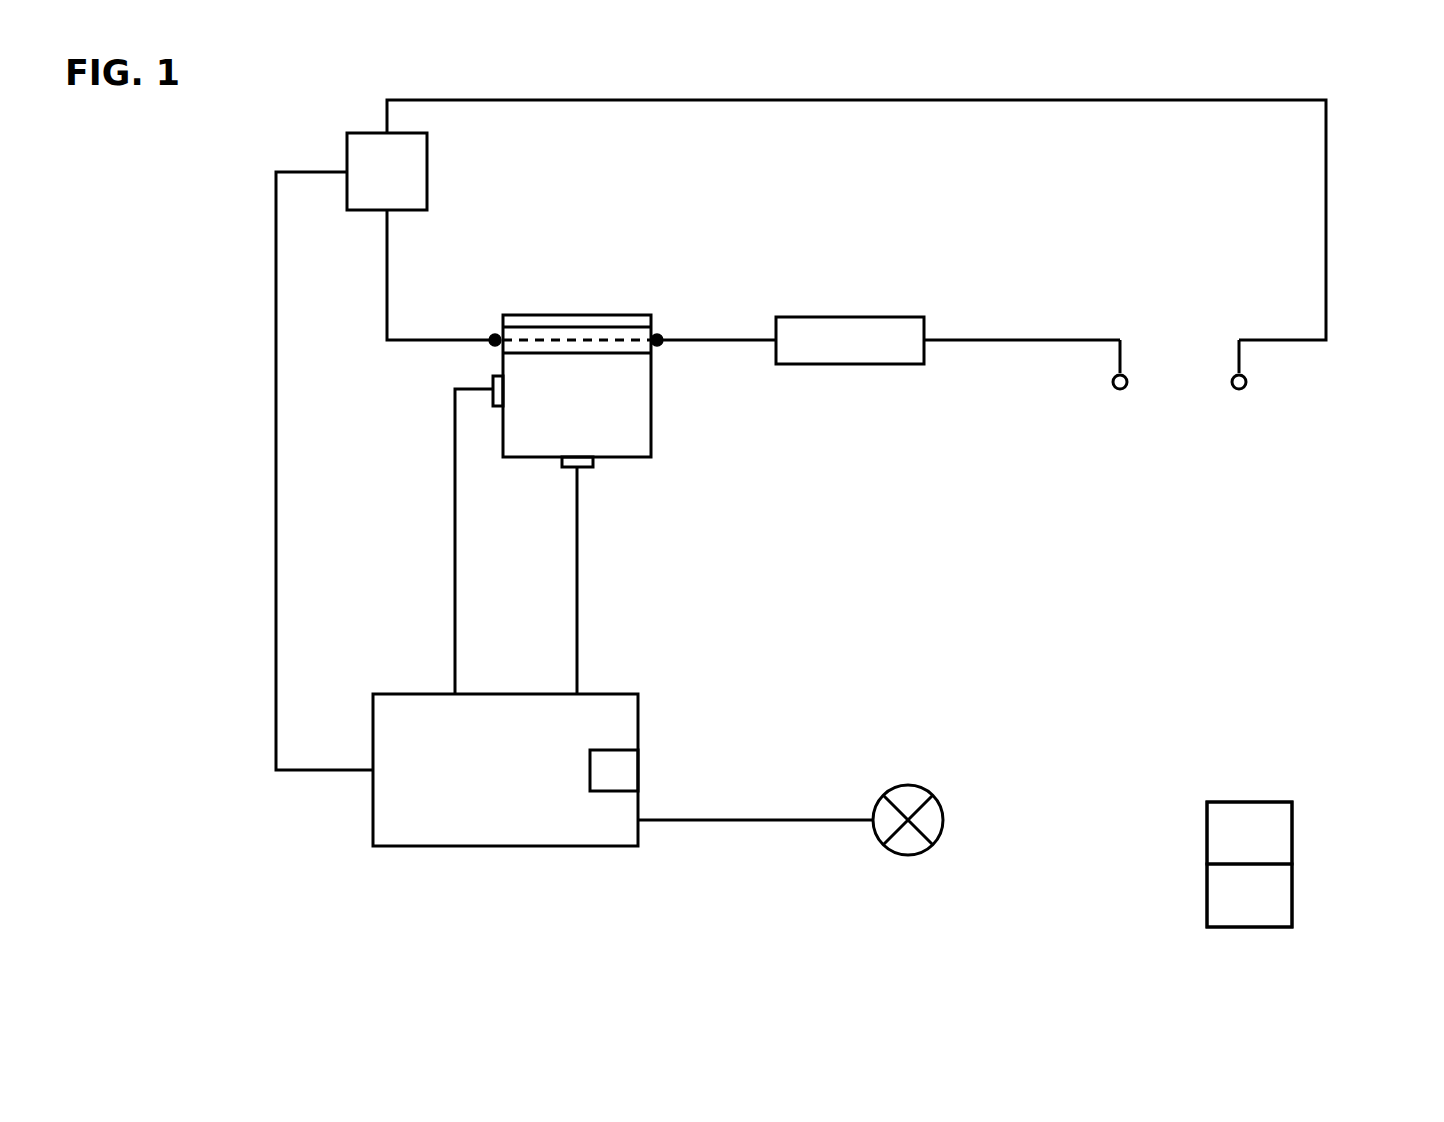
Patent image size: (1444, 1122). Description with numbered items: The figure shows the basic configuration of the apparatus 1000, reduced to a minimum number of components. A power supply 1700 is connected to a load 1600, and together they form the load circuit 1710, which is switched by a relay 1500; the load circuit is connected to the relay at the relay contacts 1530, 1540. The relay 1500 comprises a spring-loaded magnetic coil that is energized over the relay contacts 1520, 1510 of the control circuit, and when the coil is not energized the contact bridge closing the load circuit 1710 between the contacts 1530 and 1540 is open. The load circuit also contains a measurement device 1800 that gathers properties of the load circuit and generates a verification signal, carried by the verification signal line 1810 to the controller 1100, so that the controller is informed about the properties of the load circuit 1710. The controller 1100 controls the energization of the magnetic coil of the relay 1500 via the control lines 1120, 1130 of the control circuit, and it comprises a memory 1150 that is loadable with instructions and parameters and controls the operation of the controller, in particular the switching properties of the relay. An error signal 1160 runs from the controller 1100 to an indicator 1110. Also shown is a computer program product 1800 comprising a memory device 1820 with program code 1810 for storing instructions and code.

The apparatus 1000 is at (272, 858).
The controller 1100 is at (522, 848).
The indicator 1110 is at (909, 856).
The control line 1120 is at (454, 567).
The control line 1130 is at (578, 568).
The memory of controller 1150 is at (629, 770).
The error signal 1160 is at (745, 824).
The relay 1500 is at (572, 293).
The relay contact of the control circuit 1510 is at (594, 463).
The relay contact of the control circuit 1520 is at (491, 385).
The relay contact of the load circuit 1530 is at (663, 337).
The relay contact of the load circuit 1540 is at (490, 337).
The load 1600 is at (845, 316).
The power supply 1700 is at (1157, 404).
The load circuit 1710 is at (1328, 232).
The measurement device 1800 is at (427, 172).
The verification signal line 1810 is at (277, 466).
The memory device 1820 is at (1280, 898).